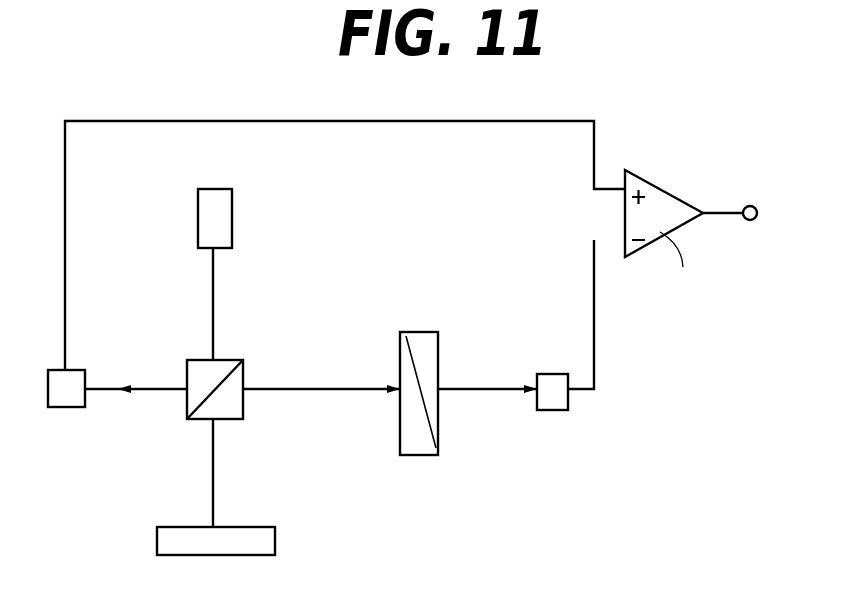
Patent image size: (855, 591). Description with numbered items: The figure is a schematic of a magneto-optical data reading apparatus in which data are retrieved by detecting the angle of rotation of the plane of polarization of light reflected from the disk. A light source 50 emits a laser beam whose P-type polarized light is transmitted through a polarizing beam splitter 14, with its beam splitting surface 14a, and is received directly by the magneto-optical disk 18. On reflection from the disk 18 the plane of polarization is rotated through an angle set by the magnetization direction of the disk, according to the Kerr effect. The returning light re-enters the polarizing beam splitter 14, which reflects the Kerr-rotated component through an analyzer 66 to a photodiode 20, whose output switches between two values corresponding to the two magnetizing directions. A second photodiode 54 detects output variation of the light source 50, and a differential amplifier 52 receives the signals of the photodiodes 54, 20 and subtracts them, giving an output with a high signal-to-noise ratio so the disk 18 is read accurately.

The polarizing beam splitter 14 is at (230, 412).
The beam splitting surface 14a is at (228, 370).
The magneto-optical disk 18 is at (267, 541).
The photodiode 20 is at (550, 377).
The light source 50 is at (223, 212).
The differential amplifier 52 is at (662, 200).
The photodiode 54 is at (70, 400).
The analyzer 66 is at (425, 342).